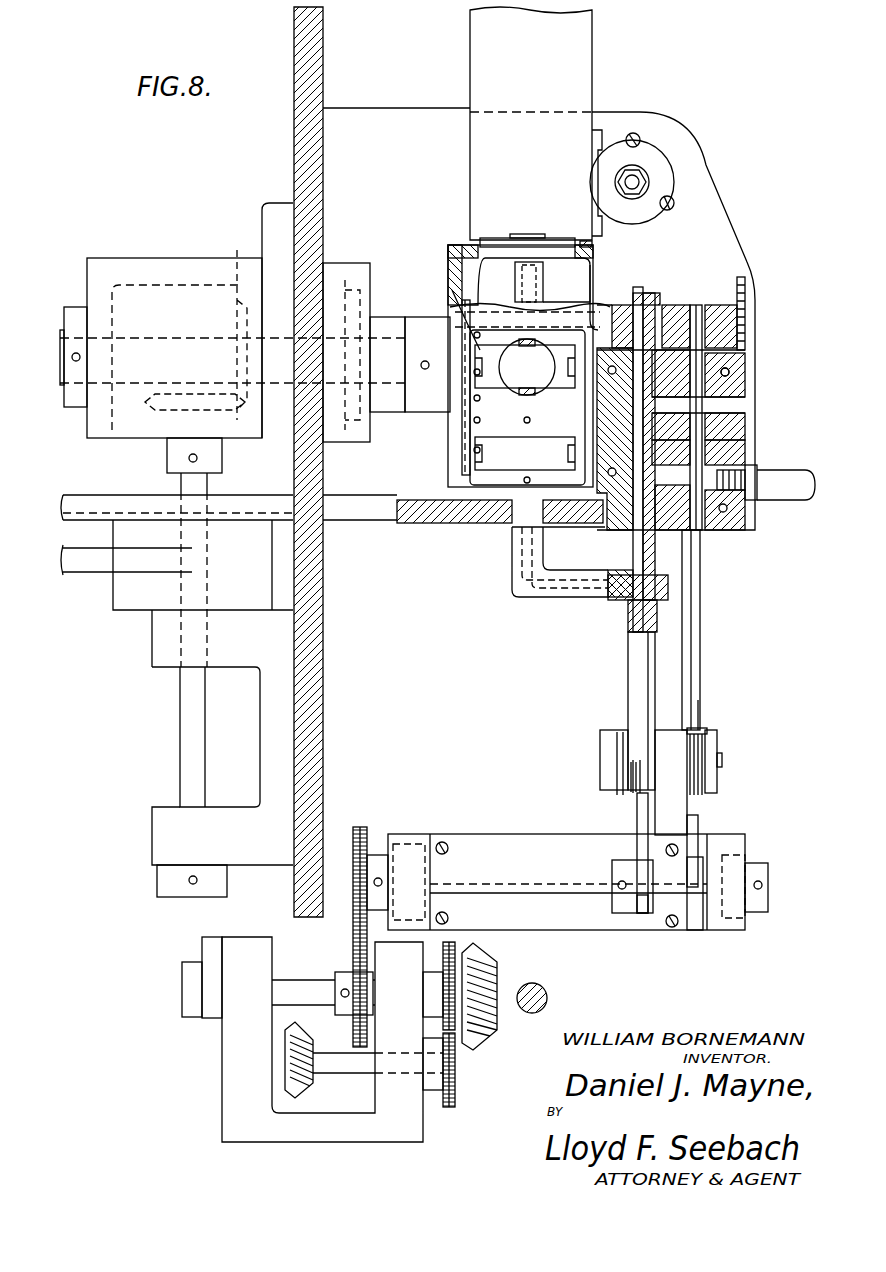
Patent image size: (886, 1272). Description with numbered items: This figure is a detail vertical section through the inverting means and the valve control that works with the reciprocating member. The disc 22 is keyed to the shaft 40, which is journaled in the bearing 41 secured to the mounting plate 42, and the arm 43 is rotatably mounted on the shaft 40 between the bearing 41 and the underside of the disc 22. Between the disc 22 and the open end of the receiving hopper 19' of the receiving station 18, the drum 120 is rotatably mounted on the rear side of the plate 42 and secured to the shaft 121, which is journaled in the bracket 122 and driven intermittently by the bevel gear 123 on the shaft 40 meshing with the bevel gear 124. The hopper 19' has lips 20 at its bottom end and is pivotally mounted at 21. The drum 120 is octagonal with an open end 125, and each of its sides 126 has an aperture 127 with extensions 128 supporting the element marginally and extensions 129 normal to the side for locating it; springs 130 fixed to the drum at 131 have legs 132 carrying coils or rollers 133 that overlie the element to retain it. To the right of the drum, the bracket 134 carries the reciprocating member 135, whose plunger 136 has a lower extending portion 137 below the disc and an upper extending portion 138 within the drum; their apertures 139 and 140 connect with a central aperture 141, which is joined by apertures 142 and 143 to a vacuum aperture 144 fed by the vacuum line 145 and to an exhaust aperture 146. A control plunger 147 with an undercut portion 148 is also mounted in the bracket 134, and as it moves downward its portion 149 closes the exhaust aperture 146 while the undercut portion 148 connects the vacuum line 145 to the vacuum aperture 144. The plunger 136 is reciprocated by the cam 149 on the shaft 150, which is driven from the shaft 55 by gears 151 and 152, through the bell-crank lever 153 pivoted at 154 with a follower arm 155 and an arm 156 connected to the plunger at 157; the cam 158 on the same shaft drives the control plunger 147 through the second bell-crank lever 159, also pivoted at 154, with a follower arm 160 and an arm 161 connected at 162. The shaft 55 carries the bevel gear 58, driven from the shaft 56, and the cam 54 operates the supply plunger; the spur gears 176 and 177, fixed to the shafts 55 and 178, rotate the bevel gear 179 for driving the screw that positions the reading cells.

The receiving station 18 is at (490, 492).
The receiving hopper 19' is at (555, 123).
The lips 20 is at (524, 236).
The pivot 21 is at (640, 182).
The disc 22 is at (78, 496).
The shaft 40 is at (180, 737).
The bearing 41 is at (152, 830).
The mounting plate 42 is at (300, 142).
The arm 43 is at (90, 573).
The cam 54 is at (204, 942).
The shaft 55 is at (304, 980).
The shaft 56 is at (547, 1004).
The bevel gear 58 is at (480, 1045).
The drum 120 is at (446, 248).
The shaft 121 is at (380, 318).
The bracket 122 is at (162, 270).
The bevel gear 123 is at (148, 448).
The bevel gear 124 is at (229, 326).
The open end 125 is at (596, 268).
The sides 126 is at (475, 405).
The aperture 127 is at (460, 203).
The extensions 128 is at (483, 248).
The extensions 129 is at (596, 243).
The springs 130 is at (530, 298).
The fixing point 131 is at (448, 310).
The legs 132 is at (475, 472).
The coils or rollers 133 is at (525, 367).
The bracket 134 is at (748, 390).
The reciprocating member 135 is at (626, 636).
The plunger 136 is at (630, 683).
The lower extending portion 137 is at (516, 580).
The upper extending portion 138 is at (544, 283).
The aperture 139 is at (550, 598).
The aperture 140 is at (520, 272).
The central aperture 141 is at (640, 560).
The aperture 142 is at (633, 538).
The aperture 143 is at (662, 447).
The vacuum aperture 144 is at (720, 530).
The vacuum line 145 is at (806, 503).
The exhaust aperture 146 is at (722, 405).
The control plunger 147 is at (700, 582).
The undercut portion 148 is at (702, 426).
The cam 149 is at (735, 382).
The shaft 150 is at (483, 870).
The gear 151 is at (352, 1030).
The gear 152 is at (360, 828).
The bell-crank lever 153 is at (640, 796).
The pivot 154 is at (717, 780).
The arm 155 is at (637, 820).
The arm 156 is at (628, 766).
The pivotal connection 157 is at (632, 786).
The cam 158 is at (695, 932).
The second bell-crank lever 159 is at (703, 752).
The follower arm 160 is at (698, 826).
The arm 161 is at (700, 722).
The pivotal connection 162 is at (707, 731).
The spur gear 176 is at (455, 945).
The spur gear 177 is at (452, 1110).
The shaft 178 is at (343, 1075).
The bevel gear 179 is at (294, 1095).